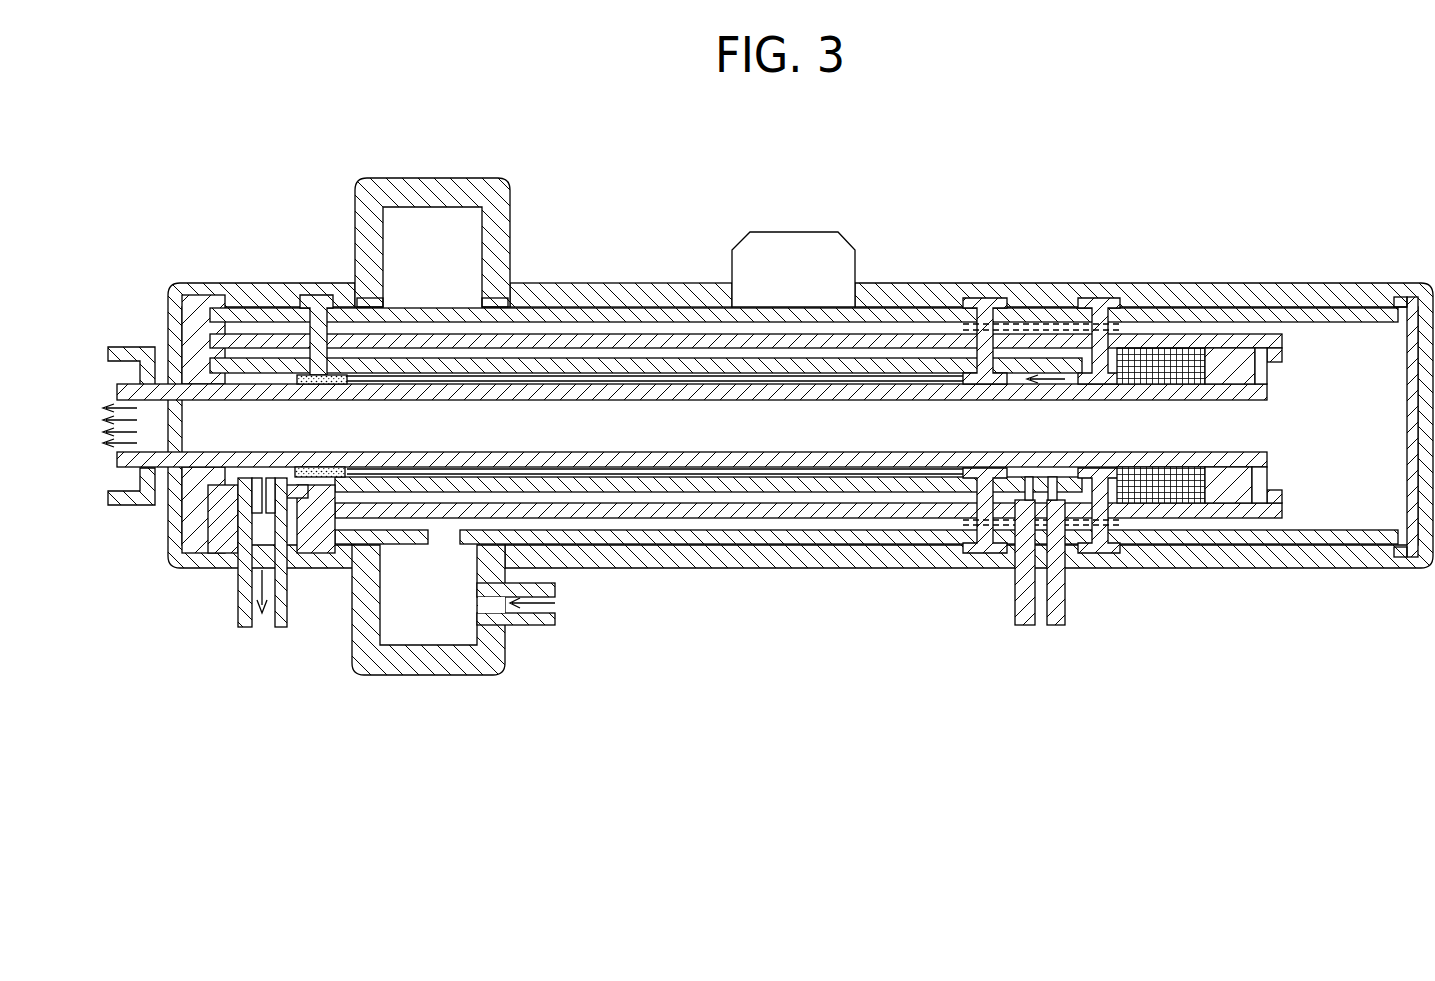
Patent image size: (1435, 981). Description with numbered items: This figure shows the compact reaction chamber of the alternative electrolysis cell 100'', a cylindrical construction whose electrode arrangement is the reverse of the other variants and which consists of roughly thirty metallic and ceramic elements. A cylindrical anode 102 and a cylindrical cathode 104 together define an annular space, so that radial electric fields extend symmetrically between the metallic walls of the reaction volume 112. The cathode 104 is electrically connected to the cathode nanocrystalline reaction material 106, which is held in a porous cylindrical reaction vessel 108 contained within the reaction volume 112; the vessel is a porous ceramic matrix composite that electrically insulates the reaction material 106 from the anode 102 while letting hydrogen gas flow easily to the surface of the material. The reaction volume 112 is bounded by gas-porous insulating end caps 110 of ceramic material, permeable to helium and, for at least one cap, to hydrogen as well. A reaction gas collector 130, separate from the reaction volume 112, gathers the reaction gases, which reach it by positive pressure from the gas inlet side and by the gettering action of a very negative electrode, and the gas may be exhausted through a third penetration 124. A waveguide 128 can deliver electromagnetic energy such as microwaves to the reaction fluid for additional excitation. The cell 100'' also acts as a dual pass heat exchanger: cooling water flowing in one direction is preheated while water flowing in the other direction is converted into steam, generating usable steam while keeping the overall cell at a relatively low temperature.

The cell 100'' is at (800, 426).
The anode 102 is at (860, 372).
The cathode 104 is at (1272, 381).
The cathode nanocrystalline reaction material 106 is at (918, 377).
The reaction vessel 108 is at (845, 378).
The end caps 110 is at (320, 374).
The reaction volume 112 is at (933, 383).
The third penetration 124 is at (263, 628).
The waveguide 128 is at (1173, 492).
The reaction gas collector 130 is at (260, 473).